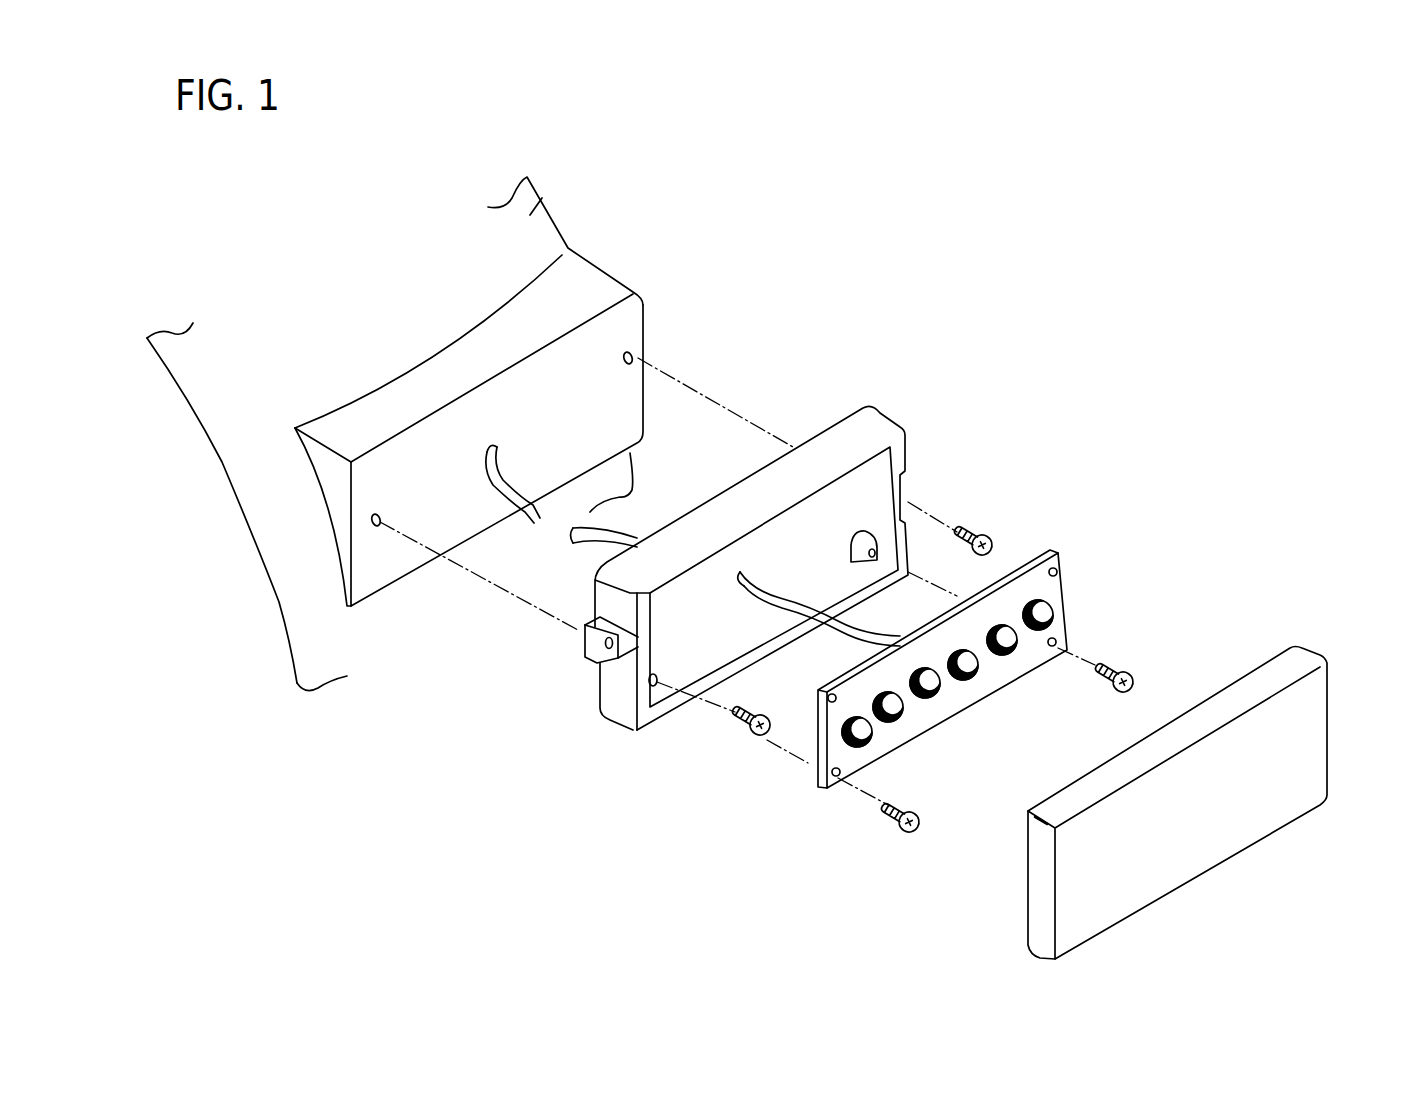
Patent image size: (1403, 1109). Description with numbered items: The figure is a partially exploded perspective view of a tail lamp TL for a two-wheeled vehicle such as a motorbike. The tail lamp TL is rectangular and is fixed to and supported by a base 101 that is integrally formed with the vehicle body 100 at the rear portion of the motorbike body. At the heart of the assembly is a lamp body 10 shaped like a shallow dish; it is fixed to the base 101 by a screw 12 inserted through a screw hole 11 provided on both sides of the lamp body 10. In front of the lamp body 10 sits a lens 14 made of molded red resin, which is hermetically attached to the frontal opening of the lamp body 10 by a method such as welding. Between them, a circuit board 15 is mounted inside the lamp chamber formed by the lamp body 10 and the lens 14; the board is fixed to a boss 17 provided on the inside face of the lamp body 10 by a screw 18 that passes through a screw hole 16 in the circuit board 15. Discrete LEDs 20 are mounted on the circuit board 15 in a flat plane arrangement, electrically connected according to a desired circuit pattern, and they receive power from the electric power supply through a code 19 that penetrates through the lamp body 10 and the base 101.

The tail lamp TL is at (1121, 333).
The vehicle body 100 is at (542, 198).
The base 101 is at (600, 292).
The lamp body 10 is at (875, 427).
The screw hole 11 is at (585, 662).
The screw 12 is at (985, 527).
The lens 14 is at (1285, 667).
The circuit board 15 is at (1024, 682).
The screw hole 16 is at (1070, 560).
The boss 17 is at (872, 525).
The screw 18 is at (1132, 665).
The code 19 is at (635, 537).
The LEDs 20 is at (1037, 640).